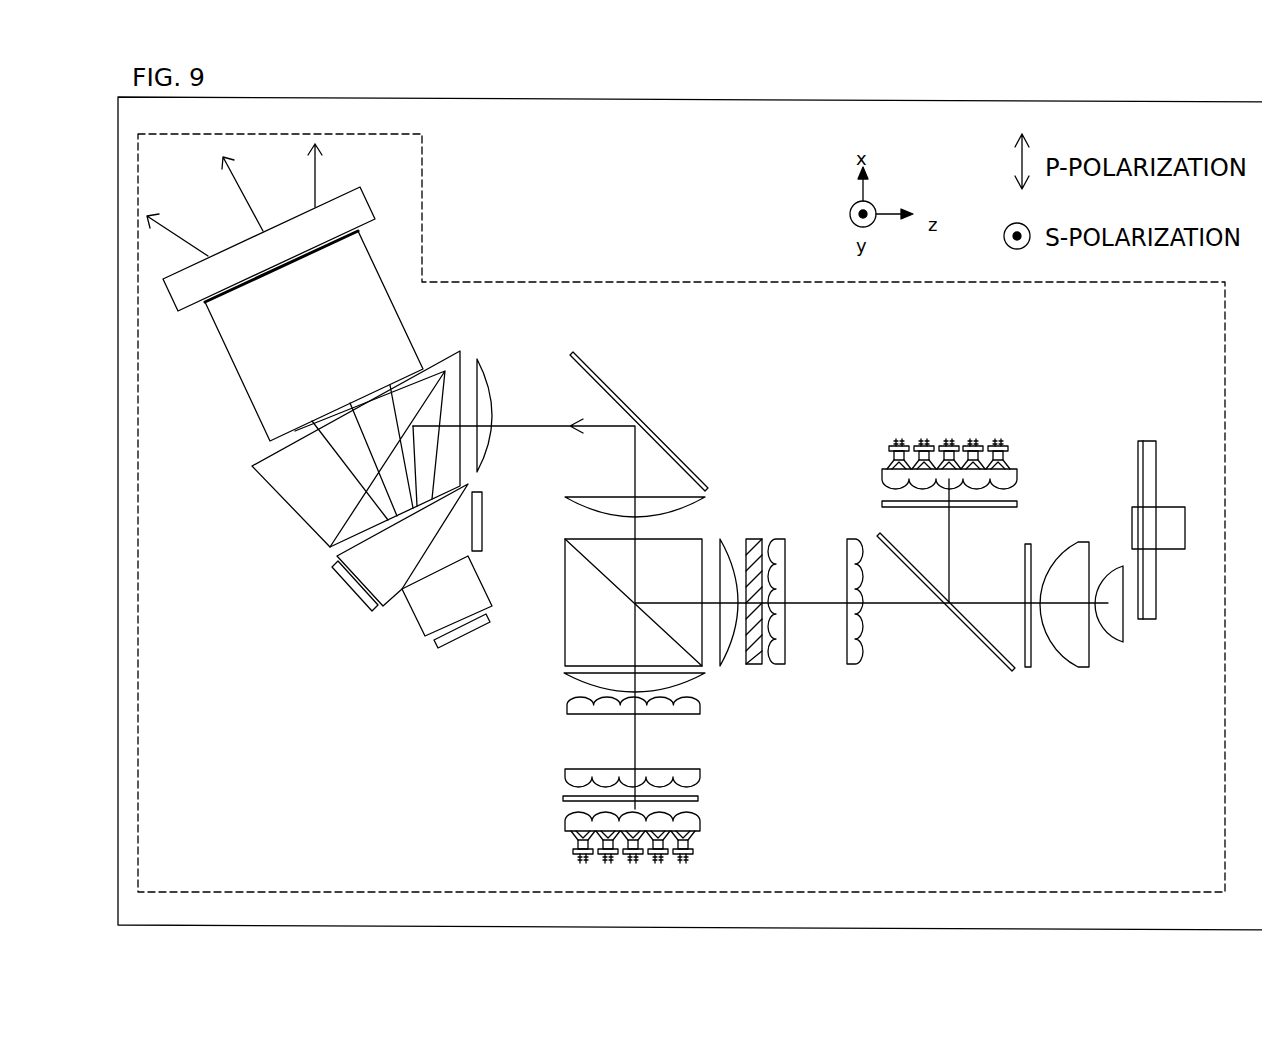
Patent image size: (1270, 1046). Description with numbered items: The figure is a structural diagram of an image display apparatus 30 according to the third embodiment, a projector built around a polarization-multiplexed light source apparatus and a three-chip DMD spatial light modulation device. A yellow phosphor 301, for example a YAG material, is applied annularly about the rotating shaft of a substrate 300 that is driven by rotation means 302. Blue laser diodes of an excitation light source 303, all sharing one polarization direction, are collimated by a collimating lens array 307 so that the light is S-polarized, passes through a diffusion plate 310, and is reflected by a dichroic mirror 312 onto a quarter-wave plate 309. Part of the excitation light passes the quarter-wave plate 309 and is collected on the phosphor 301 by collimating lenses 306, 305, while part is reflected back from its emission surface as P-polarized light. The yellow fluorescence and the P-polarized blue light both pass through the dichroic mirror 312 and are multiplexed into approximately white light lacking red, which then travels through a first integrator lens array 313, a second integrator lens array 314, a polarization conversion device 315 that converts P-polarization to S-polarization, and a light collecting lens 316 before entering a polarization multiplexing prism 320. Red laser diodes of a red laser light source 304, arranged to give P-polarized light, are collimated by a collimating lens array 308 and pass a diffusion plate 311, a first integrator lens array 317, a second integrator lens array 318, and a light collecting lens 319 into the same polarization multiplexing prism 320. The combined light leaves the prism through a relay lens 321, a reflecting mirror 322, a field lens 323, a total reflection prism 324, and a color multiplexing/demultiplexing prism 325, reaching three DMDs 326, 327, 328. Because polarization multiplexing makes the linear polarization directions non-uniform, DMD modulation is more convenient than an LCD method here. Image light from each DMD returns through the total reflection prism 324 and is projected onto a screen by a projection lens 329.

The image display apparatus 30 is at (635, 285).
The substrate 300 is at (1160, 538).
The phosphor 301 is at (1142, 440).
The rotation means 302 is at (1167, 508).
The excitation light source 303 is at (946, 440).
The red laser light source 304 is at (692, 852).
The collimating lens 305 is at (1123, 565).
The collimating lens 306 is at (1078, 542).
The collimating lens array 307 is at (887, 465).
The collimating lens array 308 is at (700, 825).
The quarter-wave plate 309 is at (1029, 665).
The diffusion plate 310 is at (880, 500).
The diffusion plate 311 is at (698, 800).
The dichroic mirror 312 is at (880, 542).
The first integrator lens array 313 is at (860, 663).
The second integrator lens array 314 is at (780, 663).
The polarization conversion device 315 is at (755, 663).
The light collecting lens 316 is at (727, 540).
The first integrator lens array 317 is at (565, 773).
The second integrator lens array 318 is at (567, 708).
The light collecting lens 319 is at (565, 675).
The polarization multiplexing prism 320 is at (565, 645).
The relay lens 321 is at (693, 495).
The reflecting mirror 322 is at (610, 402).
The field lens 323 is at (483, 368).
The total reflection prism 324 is at (287, 503).
The color multiplexing/demultiplexing prism 325 is at (394, 629).
The DMD 326 is at (477, 513).
The DMD 327 is at (438, 650).
The DMD 328 is at (340, 586).
The projection lens 329 is at (238, 378).